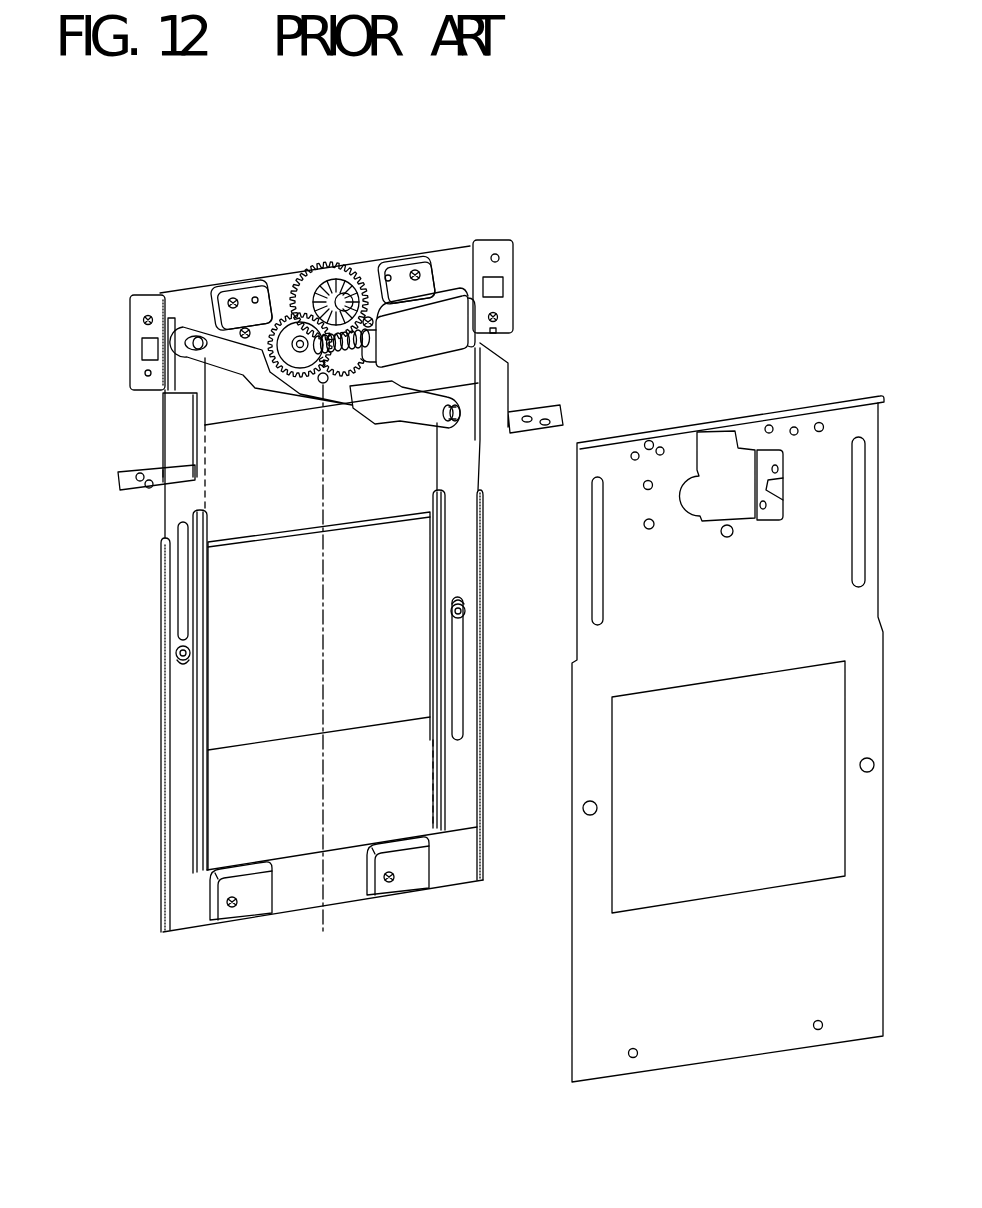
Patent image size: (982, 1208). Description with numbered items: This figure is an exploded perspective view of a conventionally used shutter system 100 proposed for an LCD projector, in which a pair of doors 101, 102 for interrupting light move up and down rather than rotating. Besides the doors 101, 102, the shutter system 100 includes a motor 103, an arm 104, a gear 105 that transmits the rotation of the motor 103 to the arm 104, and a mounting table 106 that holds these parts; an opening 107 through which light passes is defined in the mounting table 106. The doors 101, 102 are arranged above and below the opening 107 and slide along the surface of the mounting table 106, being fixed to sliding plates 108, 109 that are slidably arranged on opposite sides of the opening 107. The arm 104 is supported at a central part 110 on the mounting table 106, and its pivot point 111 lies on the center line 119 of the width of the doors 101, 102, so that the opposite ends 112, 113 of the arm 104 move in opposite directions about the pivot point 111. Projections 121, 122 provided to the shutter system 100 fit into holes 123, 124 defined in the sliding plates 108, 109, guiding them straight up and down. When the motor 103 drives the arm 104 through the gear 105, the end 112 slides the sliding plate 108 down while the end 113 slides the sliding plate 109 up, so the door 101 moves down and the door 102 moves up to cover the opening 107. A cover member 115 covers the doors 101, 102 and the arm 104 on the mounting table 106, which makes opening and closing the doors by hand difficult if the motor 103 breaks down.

The shutter system 100 is at (470, 230).
The door 101 is at (264, 505).
The door 102 is at (262, 785).
The motor 103 is at (410, 332).
The arm 104 is at (350, 400).
The gear 105 is at (318, 261).
The mounting table 106 is at (227, 390).
The opening 107 is at (210, 700).
The sliding plate 108 is at (182, 503).
The sliding plate 109 is at (457, 507).
The central part 110 is at (300, 393).
The pivot point 111 is at (322, 385).
The end 112 is at (197, 318).
The end 113 is at (478, 388).
The cover member 115 is at (838, 440).
The center line 119 is at (330, 656).
The projection 121 is at (176, 651).
The projection 122 is at (467, 612).
The hole 123 is at (184, 588).
The hole 124 is at (460, 652).